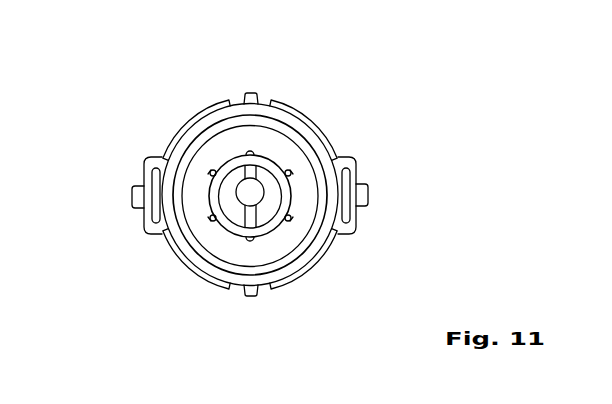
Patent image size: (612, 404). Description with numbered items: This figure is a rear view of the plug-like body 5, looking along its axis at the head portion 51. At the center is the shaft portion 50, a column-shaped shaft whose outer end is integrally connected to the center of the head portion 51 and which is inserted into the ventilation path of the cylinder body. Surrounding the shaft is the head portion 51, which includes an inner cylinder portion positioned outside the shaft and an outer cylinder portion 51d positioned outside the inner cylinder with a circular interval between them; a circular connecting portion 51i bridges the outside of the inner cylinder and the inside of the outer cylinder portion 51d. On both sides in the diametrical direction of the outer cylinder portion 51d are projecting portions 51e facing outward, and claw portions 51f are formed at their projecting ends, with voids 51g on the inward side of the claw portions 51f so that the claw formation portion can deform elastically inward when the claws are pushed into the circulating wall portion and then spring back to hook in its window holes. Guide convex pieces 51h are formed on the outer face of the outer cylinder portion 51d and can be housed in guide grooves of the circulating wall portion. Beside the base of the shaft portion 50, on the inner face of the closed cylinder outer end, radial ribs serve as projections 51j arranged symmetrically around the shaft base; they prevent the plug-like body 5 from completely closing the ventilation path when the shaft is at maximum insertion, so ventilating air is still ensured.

The plug-like body 5 is at (323, 124).
The shaft portion 50 is at (258, 190).
The head portion 51 is at (317, 122).
The outer cylinder portion 51d is at (288, 188).
The projecting portions 51e is at (151, 161).
The claw portions 51f is at (132, 198).
The voids 51g is at (153, 218).
The guide convex pieces 51h is at (251, 92).
The circular connecting portion 51i is at (302, 265).
The projections 51j is at (249, 179).